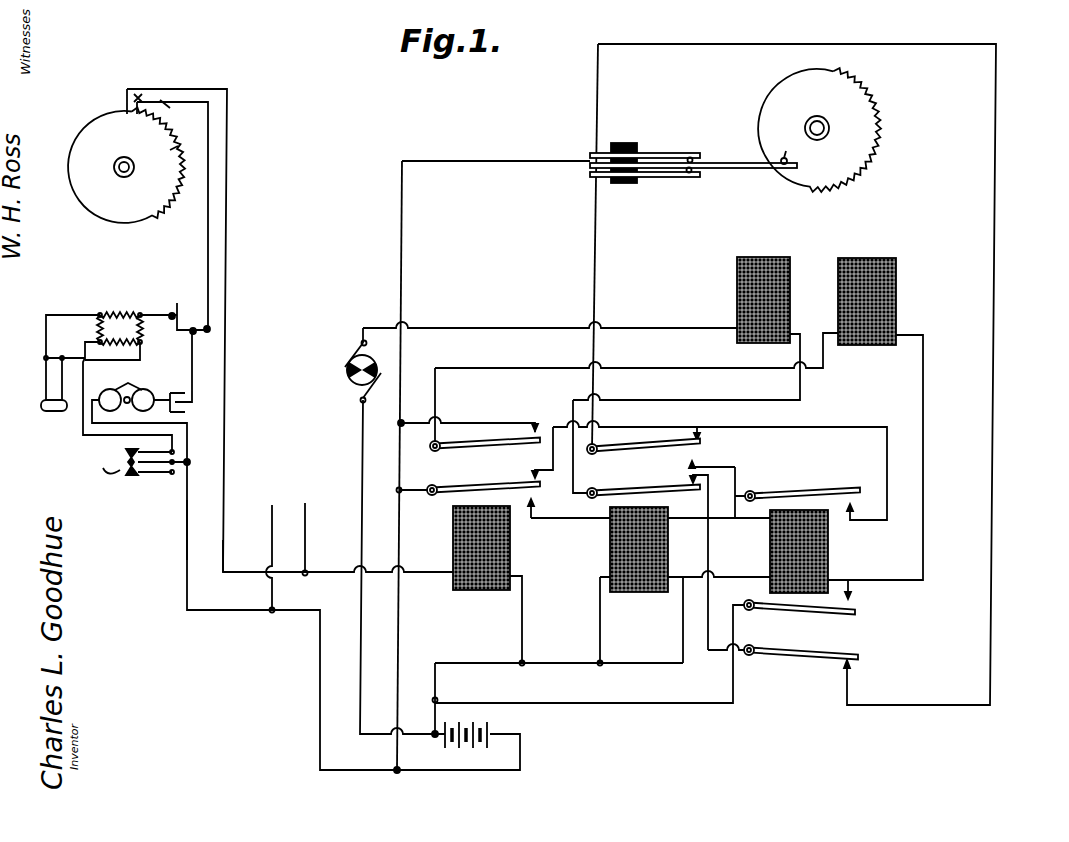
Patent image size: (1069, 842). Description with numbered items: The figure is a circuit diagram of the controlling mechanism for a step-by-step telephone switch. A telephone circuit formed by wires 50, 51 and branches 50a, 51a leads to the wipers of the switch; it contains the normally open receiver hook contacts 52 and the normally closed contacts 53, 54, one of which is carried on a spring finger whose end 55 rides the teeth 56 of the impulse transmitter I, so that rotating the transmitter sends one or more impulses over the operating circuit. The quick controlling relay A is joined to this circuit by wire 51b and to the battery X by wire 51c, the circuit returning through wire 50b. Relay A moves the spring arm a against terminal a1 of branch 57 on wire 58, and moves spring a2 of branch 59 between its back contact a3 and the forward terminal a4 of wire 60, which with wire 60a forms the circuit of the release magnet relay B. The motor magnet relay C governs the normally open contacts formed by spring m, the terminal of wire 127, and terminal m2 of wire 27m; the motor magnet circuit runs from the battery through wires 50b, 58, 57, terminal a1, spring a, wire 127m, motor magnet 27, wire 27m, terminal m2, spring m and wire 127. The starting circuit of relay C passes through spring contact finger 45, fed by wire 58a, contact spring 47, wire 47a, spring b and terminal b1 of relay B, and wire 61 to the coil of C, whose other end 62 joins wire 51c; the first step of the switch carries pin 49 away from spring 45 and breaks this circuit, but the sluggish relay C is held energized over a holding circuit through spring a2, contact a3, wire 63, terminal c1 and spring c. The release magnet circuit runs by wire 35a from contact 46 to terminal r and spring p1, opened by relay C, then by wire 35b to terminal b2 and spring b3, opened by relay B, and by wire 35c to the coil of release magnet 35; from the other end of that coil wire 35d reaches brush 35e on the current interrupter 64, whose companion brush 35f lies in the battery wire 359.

The impulse transmitter I is at (126, 165).
The teeth 56 is at (162, 165).
The normally closed contact 54 is at (172, 88).
The spring finger end 55 is at (127, 98).
The normally closed contact 53 is at (174, 113).
The receiver hook contacts 52 is at (124, 452).
The wire 50 is at (185, 538).
The branch 50a is at (271, 540).
The wire 50b is at (433, 775).
The wire 51 is at (230, 505).
The branch 51a is at (316, 515).
The wire 51b is at (430, 575).
The wire 51c is at (485, 672).
The battery X is at (459, 725).
The battery wire 359 is at (378, 567).
The wire 58 is at (398, 655).
The wire 58a is at (520, 161).
The wire 47a is at (594, 210).
The wire 35a is at (991, 398).
The wire 35b is at (706, 572).
The wire 35c is at (665, 395).
The wire 35d is at (553, 328).
The brush 35e is at (355, 345).
The brush 35f is at (382, 393).
The current interrupter 64 is at (352, 375).
The wire 127m is at (636, 389).
The wire 127 is at (733, 698).
The branch 57 is at (475, 428).
The branch 59 is at (432, 480).
The wire 60 is at (555, 518).
The wire 60a is at (598, 622).
The wire 61 is at (738, 486).
The wire 62 is at (742, 556).
The wire 63 is at (822, 433).
The spring arm a is at (476, 436).
The terminal a1 is at (536, 420).
The spring a2 is at (496, 478).
The back contact a3 is at (540, 470).
The forward terminal a4 is at (537, 503).
The spring b is at (650, 441).
The terminal b1 is at (712, 463).
The terminal b2 is at (679, 556).
The spring b3 is at (632, 490).
The spring c is at (848, 490).
The terminal c1 is at (858, 507).
The spring m is at (846, 618).
The terminal m2 is at (858, 600).
The spring p1 is at (862, 652).
The terminal r is at (850, 668).
The wire 27m is at (923, 558).
The controlling relay A is at (450, 540).
The release magnet relay B is at (623, 549).
The motor magnet relay C is at (770, 552).
The release magnet 35 is at (737, 285).
The motor magnet 27 is at (900, 290).
The contact 46 is at (676, 153).
The spring contact finger 45 is at (736, 166).
The contact spring 47 is at (676, 177).
The pin 49 is at (787, 156).